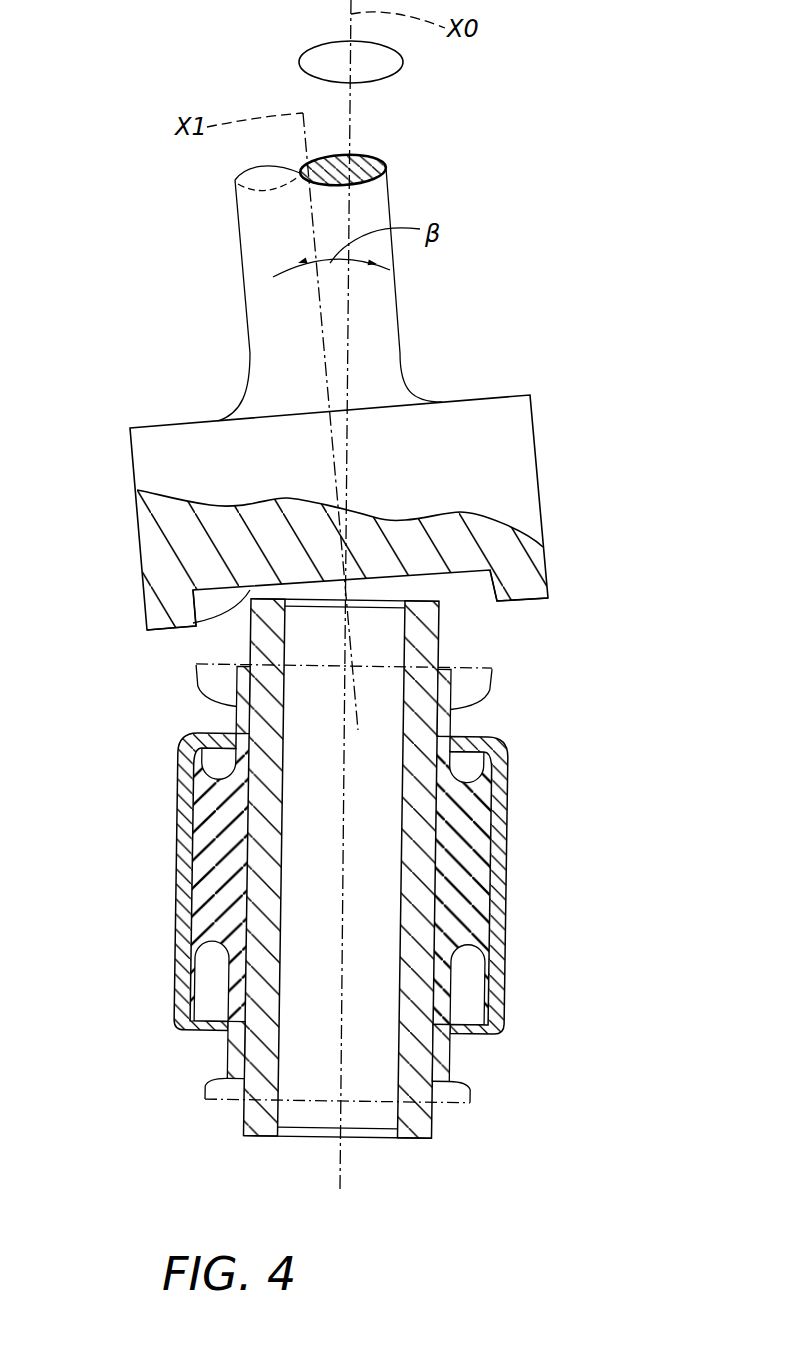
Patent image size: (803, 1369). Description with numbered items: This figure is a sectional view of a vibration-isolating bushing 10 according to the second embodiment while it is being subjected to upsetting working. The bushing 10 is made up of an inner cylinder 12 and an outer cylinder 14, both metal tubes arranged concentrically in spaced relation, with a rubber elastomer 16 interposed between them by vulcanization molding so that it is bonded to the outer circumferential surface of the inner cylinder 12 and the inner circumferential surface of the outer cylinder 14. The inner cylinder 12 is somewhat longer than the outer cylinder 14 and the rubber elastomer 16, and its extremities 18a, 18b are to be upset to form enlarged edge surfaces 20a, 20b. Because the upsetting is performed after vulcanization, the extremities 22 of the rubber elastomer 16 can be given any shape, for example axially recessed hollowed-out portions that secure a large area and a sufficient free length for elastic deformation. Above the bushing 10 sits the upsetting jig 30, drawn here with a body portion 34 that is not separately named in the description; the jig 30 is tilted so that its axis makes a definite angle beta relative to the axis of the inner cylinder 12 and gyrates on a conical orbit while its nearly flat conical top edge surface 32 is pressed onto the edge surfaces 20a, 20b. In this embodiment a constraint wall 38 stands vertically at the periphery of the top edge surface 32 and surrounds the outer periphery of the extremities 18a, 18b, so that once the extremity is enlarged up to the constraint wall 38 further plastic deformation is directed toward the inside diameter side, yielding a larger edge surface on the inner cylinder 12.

The vibration-isolating bushing 10 is at (372, 890).
The inner cylinder 12 is at (421, 838).
The outer cylinder 14 is at (498, 940).
The rubber elastomer 16 is at (463, 888).
The extremity of inner cylinder 18a is at (250, 643).
The extremity of inner cylinder 18b is at (435, 1117).
The edge surface of inner cylinder 20a is at (443, 590).
The edge surface of inner cylinder 20b is at (257, 1136).
The extremities of rubber elastomer 22 is at (480, 740).
The upsetting jig 30 is at (416, 350).
The top edge surface 32 is at (250, 622).
The mounting member 34 is at (468, 443).
The constraint wall 38 is at (523, 583).